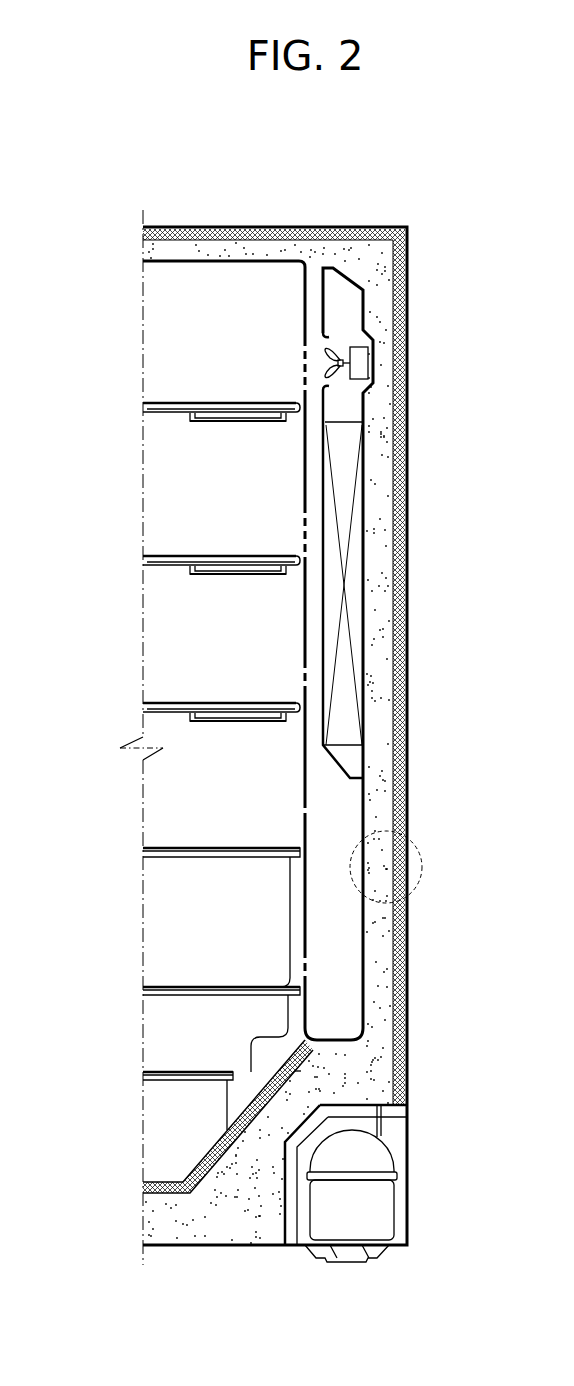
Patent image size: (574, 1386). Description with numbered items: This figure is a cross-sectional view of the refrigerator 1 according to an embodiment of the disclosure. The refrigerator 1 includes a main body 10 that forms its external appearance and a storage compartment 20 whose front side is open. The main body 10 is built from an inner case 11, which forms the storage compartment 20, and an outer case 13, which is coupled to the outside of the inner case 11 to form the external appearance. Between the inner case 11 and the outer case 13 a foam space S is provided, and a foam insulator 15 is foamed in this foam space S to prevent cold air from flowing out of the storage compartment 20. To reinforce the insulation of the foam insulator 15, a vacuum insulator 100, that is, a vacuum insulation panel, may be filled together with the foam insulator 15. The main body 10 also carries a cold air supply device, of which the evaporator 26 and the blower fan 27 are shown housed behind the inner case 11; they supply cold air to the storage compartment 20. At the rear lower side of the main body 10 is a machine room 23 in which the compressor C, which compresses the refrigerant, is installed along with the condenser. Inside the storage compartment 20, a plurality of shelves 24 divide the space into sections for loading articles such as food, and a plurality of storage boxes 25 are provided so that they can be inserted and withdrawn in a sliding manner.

The refrigerator 1 is at (278, 171).
The main body 10 is at (408, 227).
The inner case 11 is at (262, 261).
The outer case 13 is at (403, 509).
The foam insulator 15 is at (381, 571).
The storage compartment 20 is at (260, 515).
The machine room 23 is at (366, 1123).
The shelf 24 is at (172, 404).
The storage box 25 is at (175, 922).
The evaporator 26 is at (348, 434).
The blower fan 27 is at (367, 362).
The vacuum insulator 100 is at (406, 473).
The foam space S is at (384, 662).
The compressor C is at (382, 1200).